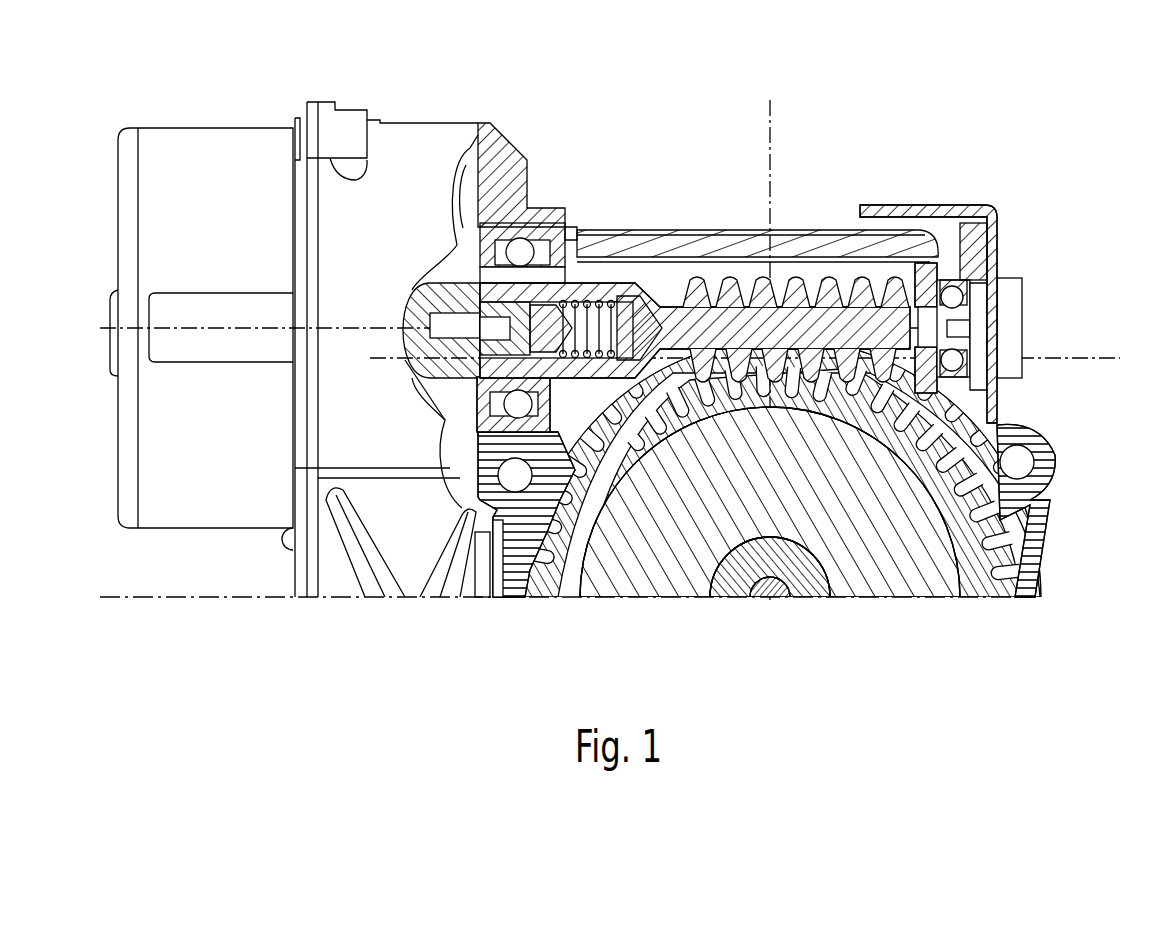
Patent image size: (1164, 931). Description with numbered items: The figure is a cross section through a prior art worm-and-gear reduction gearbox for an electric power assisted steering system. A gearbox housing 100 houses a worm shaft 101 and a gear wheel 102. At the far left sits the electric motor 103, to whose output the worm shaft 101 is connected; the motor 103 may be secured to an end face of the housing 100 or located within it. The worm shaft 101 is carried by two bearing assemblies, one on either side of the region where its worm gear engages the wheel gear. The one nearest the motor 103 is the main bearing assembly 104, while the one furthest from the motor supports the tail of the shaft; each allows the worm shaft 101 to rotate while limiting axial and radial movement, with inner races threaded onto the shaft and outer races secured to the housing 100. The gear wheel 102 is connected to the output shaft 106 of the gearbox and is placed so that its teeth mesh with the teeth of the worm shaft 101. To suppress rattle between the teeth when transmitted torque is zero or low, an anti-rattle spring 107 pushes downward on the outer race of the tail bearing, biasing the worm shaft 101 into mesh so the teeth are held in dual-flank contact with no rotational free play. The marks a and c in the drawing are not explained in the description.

The gearbox housing 100 is at (675, 318).
The worm shaft 101 is at (710, 262).
The gear wheel 102 is at (818, 468).
The electric motor 103 is at (201, 295).
The main bearing assembly 104 is at (540, 281).
The output shaft 106 is at (923, 555).
The anti-rattle spring 107 is at (928, 277).
The axis / section plane a is at (802, 234).
The bearing c is at (1011, 294).